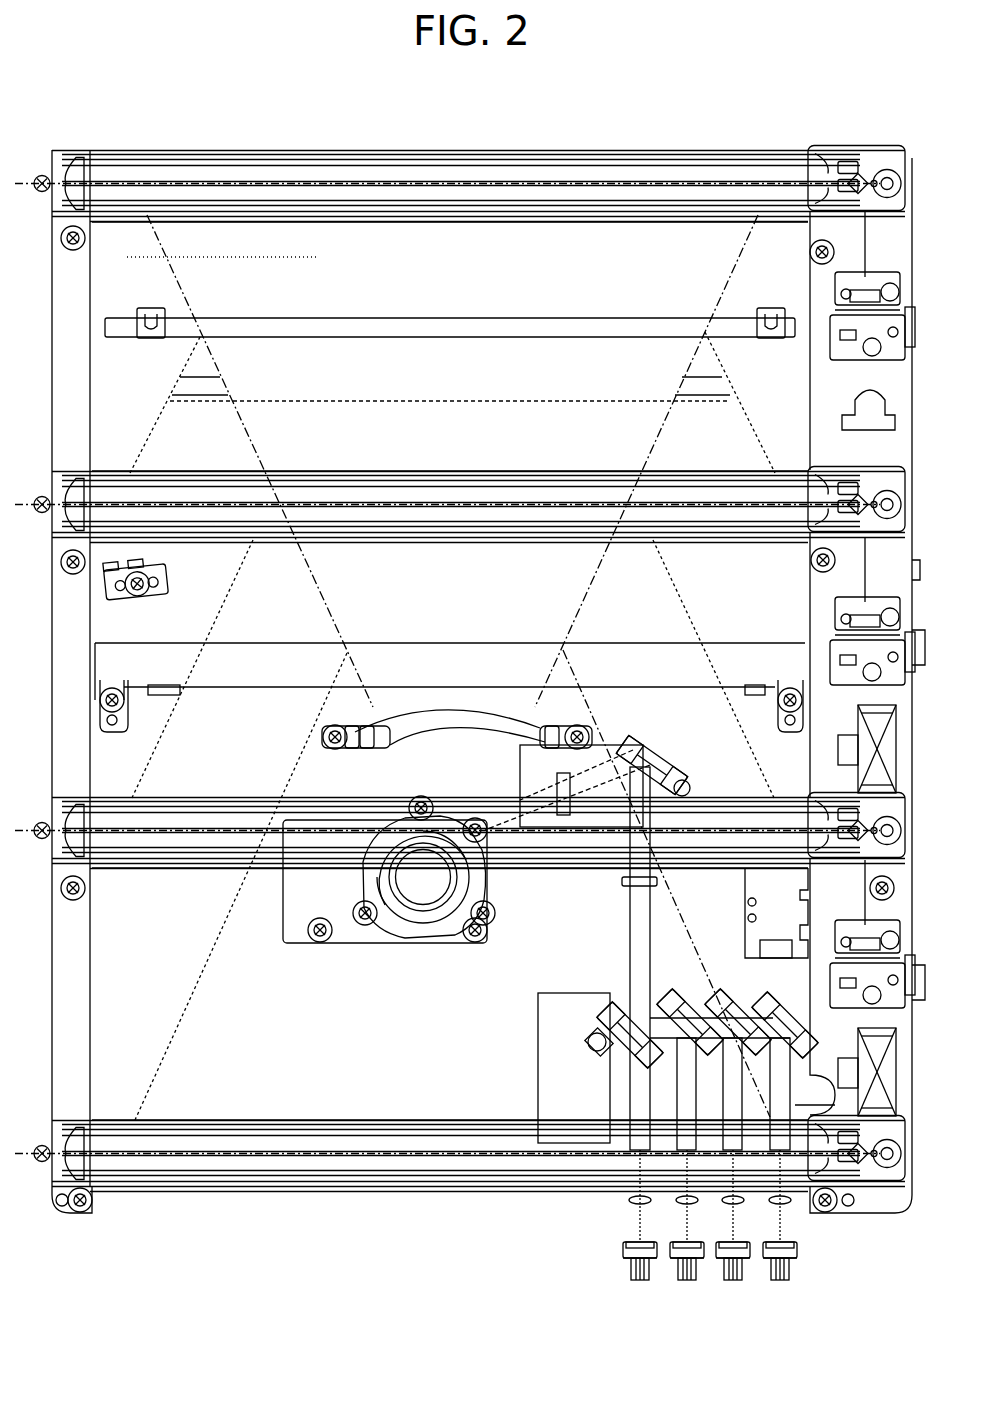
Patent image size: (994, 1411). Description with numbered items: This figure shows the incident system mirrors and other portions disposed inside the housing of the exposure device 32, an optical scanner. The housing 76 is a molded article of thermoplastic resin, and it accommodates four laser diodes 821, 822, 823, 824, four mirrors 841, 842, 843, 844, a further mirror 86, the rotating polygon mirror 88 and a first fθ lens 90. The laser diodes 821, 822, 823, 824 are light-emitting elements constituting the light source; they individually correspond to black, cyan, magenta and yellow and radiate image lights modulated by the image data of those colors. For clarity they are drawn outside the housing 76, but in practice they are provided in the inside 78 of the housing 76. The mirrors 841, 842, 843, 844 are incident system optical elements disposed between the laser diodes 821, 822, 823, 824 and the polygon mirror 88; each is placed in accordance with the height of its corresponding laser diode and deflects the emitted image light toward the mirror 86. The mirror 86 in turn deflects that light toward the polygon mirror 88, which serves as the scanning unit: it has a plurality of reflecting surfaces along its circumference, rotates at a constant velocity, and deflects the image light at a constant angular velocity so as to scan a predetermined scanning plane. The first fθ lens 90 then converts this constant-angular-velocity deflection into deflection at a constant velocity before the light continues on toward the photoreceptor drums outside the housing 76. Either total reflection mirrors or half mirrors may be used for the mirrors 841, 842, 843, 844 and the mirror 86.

The exposure device 32 is at (80, 84).
The housing 76 is at (125, 265).
The inside of the housing 78 is at (245, 1092).
The mirror 86 is at (650, 745).
The rotating polygon mirror 88 is at (400, 935).
The first fθ lens 90 is at (432, 717).
The mirror 841 is at (795, 1020).
The mirror 842 is at (740, 1010).
The mirror 843 is at (685, 1020).
The mirror 844 is at (625, 1010).
The laser diode 821 is at (800, 1260).
The laser diode 822 is at (740, 1262).
The laser diode 823 is at (670, 1262).
The laser diode 824 is at (622, 1262).